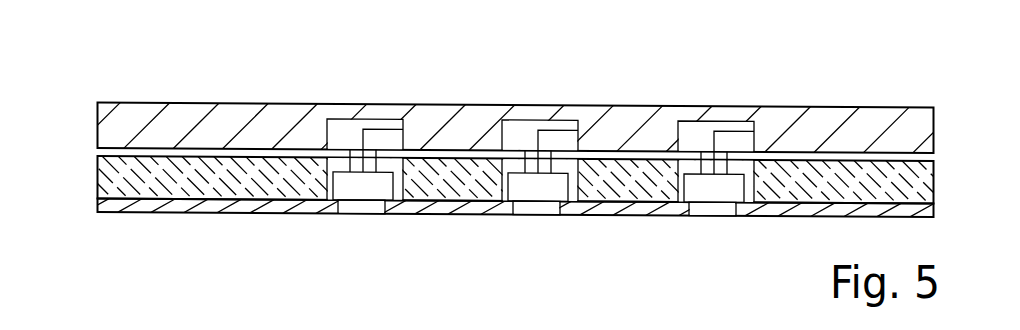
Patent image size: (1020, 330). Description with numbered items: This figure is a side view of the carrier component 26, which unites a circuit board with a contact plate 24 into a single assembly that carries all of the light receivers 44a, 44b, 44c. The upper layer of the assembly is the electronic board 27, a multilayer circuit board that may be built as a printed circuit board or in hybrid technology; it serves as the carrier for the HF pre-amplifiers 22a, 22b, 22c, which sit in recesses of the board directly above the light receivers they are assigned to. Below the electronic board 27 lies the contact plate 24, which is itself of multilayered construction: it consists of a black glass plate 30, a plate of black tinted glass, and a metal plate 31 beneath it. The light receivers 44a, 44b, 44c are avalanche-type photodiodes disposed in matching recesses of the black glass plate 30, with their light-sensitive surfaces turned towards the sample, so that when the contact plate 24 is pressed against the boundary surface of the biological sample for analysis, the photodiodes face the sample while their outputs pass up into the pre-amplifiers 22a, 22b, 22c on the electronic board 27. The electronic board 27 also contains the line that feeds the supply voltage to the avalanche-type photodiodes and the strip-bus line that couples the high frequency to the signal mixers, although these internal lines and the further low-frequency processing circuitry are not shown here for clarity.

The HF pre-amplifier 22a is at (347, 128).
The HF pre-amplifier 22b is at (528, 128).
The HF pre-amplifier 22c is at (695, 133).
The contact plate 24 is at (511, 217).
The carrier component 26 is at (511, 161).
The electronic board 27 is at (90, 121).
The black glass plate 30 is at (523, 180).
The metal plate 31 is at (90, 178).
The light receiver 44a is at (362, 192).
The light receiver 44b is at (537, 193).
The light receiver 44c is at (717, 193).